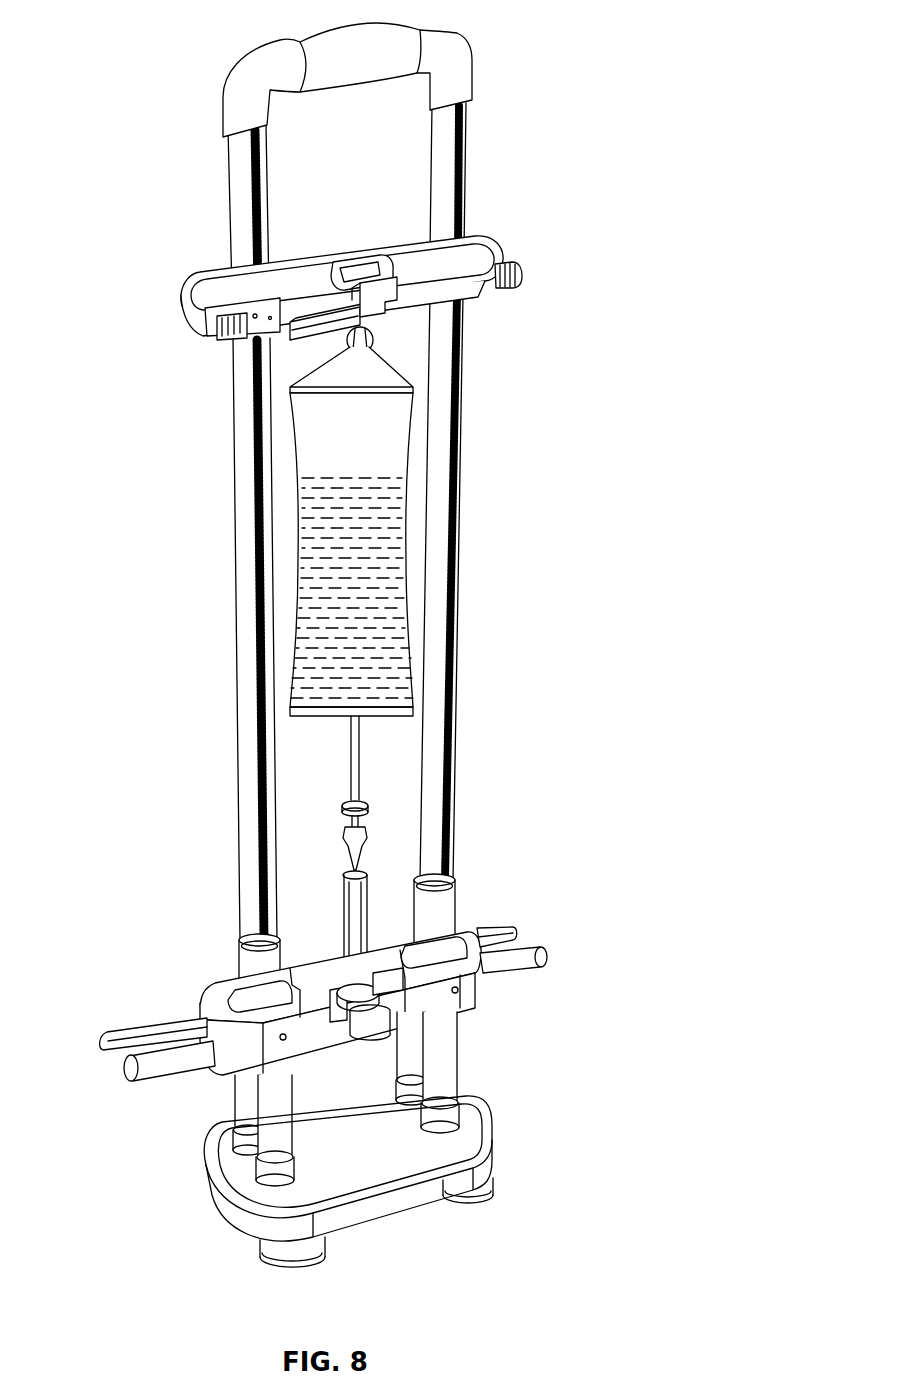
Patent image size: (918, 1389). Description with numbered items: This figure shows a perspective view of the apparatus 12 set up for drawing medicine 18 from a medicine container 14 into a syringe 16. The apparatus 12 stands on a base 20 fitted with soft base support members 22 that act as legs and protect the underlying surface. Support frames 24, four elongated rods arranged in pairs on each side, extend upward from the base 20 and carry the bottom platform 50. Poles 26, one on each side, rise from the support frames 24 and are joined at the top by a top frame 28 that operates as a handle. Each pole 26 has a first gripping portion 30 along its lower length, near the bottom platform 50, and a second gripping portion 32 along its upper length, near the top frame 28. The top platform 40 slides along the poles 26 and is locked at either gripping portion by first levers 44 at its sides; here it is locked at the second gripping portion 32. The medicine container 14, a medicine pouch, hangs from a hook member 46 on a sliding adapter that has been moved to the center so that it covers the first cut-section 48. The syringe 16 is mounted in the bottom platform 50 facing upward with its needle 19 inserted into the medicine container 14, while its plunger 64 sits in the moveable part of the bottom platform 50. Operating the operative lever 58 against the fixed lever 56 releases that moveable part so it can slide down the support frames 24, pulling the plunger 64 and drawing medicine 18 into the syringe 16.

The apparatus 12 is at (361, 509).
The medicine container 14 is at (417, 531).
The syringe 16 is at (358, 905).
The medicine 18 is at (397, 565).
The needle 19 is at (360, 745).
The base 20 is at (393, 1181).
The base support members 22 is at (482, 1190).
The support frames 24 is at (445, 1078).
The poles 26 is at (450, 812).
The top frame 28 is at (455, 52).
The first gripping portion 30 is at (255, 820).
The second gripping portion 32 is at (250, 438).
The top platform 40 is at (400, 253).
The first levers 44 is at (520, 272).
The hook member 46 is at (373, 341).
The first cut-section 48 is at (352, 275).
The bottom platform 50 is at (350, 1067).
The fixed lever 56 is at (120, 1068).
The operative lever 58 is at (112, 1032).
The plunger 64 is at (353, 992).